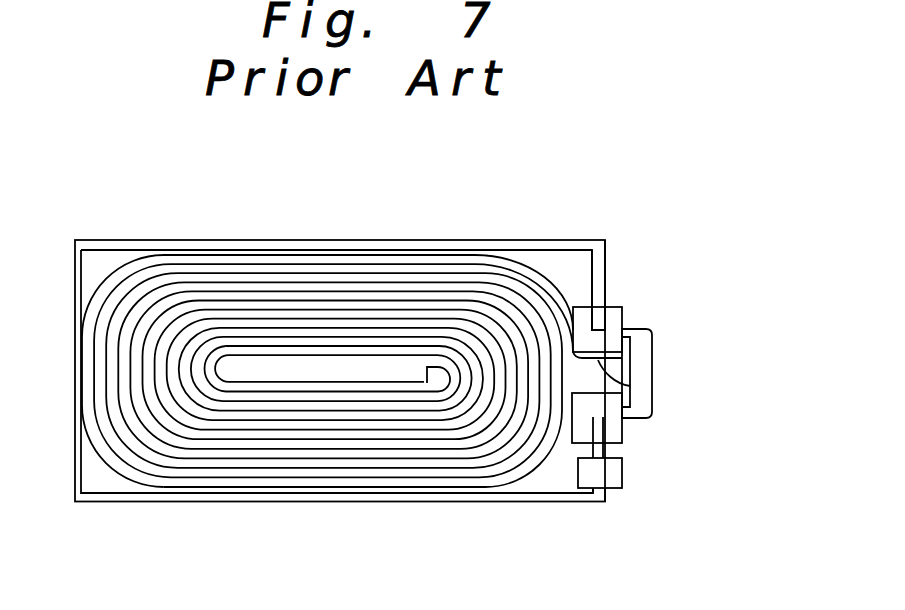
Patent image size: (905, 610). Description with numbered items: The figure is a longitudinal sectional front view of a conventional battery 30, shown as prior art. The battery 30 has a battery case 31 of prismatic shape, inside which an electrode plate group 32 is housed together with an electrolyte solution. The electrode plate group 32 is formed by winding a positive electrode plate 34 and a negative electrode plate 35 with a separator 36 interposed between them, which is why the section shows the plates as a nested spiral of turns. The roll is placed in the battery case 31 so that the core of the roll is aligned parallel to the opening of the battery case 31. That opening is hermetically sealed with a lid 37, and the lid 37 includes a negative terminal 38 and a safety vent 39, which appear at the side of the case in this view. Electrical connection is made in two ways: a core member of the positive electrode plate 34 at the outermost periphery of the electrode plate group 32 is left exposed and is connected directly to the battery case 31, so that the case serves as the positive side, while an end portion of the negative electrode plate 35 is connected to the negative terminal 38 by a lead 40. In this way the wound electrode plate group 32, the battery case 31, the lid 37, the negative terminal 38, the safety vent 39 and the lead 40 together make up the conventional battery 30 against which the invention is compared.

The battery 30 is at (214, 232).
The battery case 31 is at (403, 240).
The electrode plate group 32 is at (345, 446).
The positive electrode plate 34 is at (505, 483).
The negative electrode plate 35 is at (480, 263).
The separator 36 is at (571, 306).
The lid 37 is at (607, 281).
The negative terminal 38 is at (624, 329).
The safety vent 39 is at (623, 470).
The lead 40 is at (630, 386).